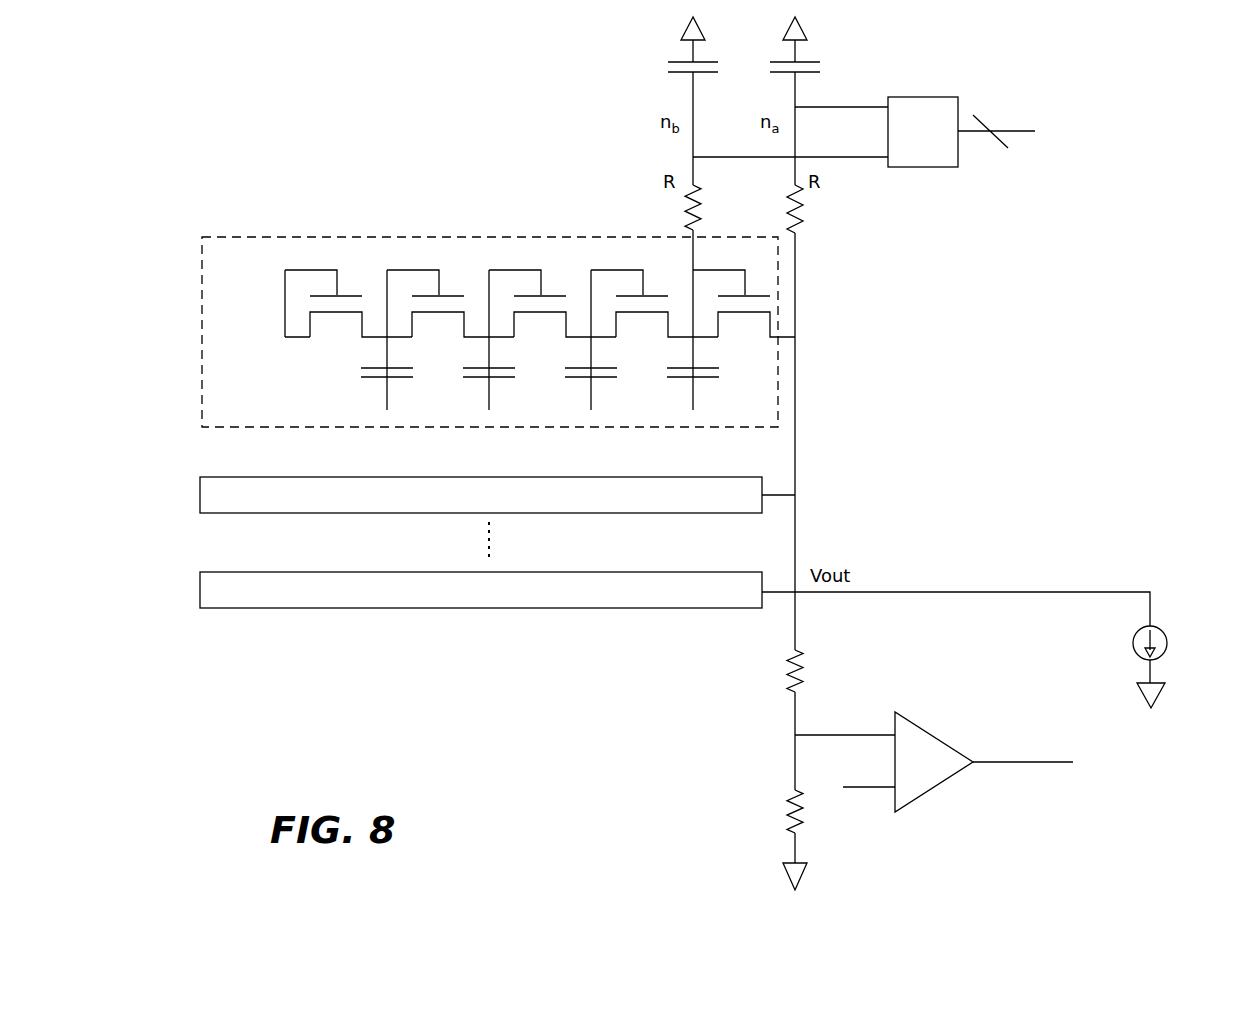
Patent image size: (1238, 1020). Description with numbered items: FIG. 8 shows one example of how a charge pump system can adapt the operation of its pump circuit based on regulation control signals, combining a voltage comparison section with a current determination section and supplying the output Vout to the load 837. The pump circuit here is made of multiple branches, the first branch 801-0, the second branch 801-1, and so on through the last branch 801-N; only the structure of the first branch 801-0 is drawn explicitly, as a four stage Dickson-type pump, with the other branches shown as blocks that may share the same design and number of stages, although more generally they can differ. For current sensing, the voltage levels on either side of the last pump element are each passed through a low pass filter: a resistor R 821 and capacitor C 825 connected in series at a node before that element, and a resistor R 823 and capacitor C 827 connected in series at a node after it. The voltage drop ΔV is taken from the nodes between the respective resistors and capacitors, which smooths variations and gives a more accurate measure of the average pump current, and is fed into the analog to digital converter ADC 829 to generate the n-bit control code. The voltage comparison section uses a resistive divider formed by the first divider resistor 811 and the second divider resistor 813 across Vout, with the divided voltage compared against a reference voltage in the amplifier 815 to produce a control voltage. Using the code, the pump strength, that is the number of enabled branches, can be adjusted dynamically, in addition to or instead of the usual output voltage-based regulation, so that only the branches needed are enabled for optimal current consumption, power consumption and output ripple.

The Branch 0 801-0 is at (257, 237).
The Branch 1 801-1 is at (252, 477).
The Branch N 801-N is at (252, 572).
The resistor R1 811 is at (808, 670).
The resistor R2 813 is at (807, 805).
The amplifier 815 is at (912, 718).
The resistor R 821 is at (683, 192).
The resistor R 823 is at (805, 207).
The capacitor C 825 is at (677, 62).
The capacitor C 827 is at (813, 62).
The analog to digital converter ADC 829 is at (927, 97).
The load 837 is at (1158, 628).